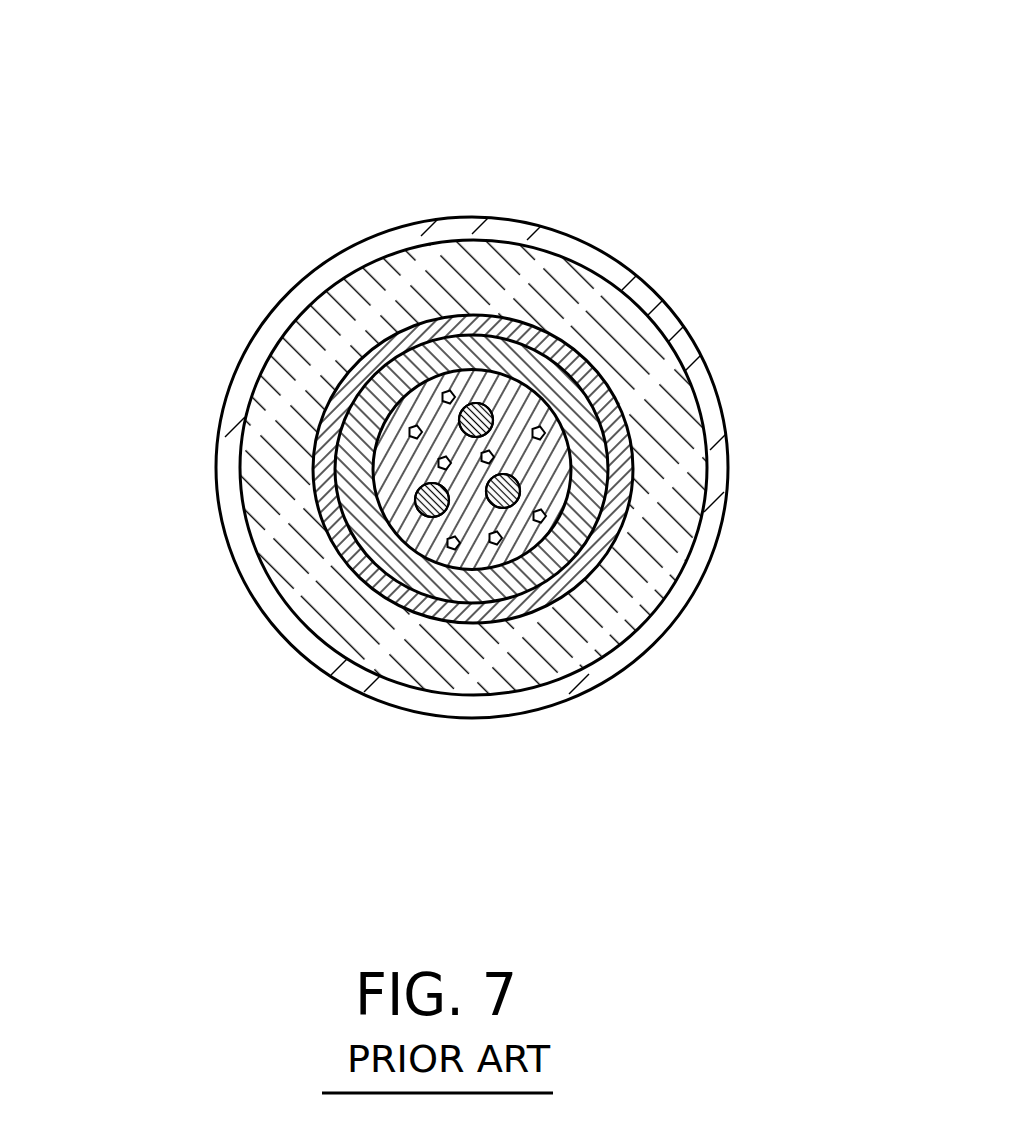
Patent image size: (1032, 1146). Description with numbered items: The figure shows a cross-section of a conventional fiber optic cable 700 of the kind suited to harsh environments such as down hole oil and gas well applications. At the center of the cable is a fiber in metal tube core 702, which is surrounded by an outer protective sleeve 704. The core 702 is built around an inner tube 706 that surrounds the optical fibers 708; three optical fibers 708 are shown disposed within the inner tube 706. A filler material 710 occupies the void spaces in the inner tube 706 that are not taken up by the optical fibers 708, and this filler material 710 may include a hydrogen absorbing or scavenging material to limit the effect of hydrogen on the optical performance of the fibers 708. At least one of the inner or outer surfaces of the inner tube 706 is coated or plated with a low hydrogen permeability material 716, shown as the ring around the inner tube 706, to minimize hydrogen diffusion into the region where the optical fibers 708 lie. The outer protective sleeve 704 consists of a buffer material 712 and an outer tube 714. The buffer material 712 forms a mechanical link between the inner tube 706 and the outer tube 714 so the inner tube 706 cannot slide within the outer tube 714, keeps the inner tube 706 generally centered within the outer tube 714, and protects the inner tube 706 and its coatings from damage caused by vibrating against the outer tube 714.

The fiber optic cable 700 is at (678, 312).
The fiber in metal tube (FIMT) core 702 is at (487, 347).
The outer protective sleeve 704 is at (290, 282).
The inner tube 706 is at (533, 562).
The optical fibers 708 is at (437, 513).
The filler material 710 is at (520, 465).
The buffer material 712 is at (370, 297).
The outer tube 714 is at (225, 402).
The low hydrogen permeability material 716 is at (560, 330).